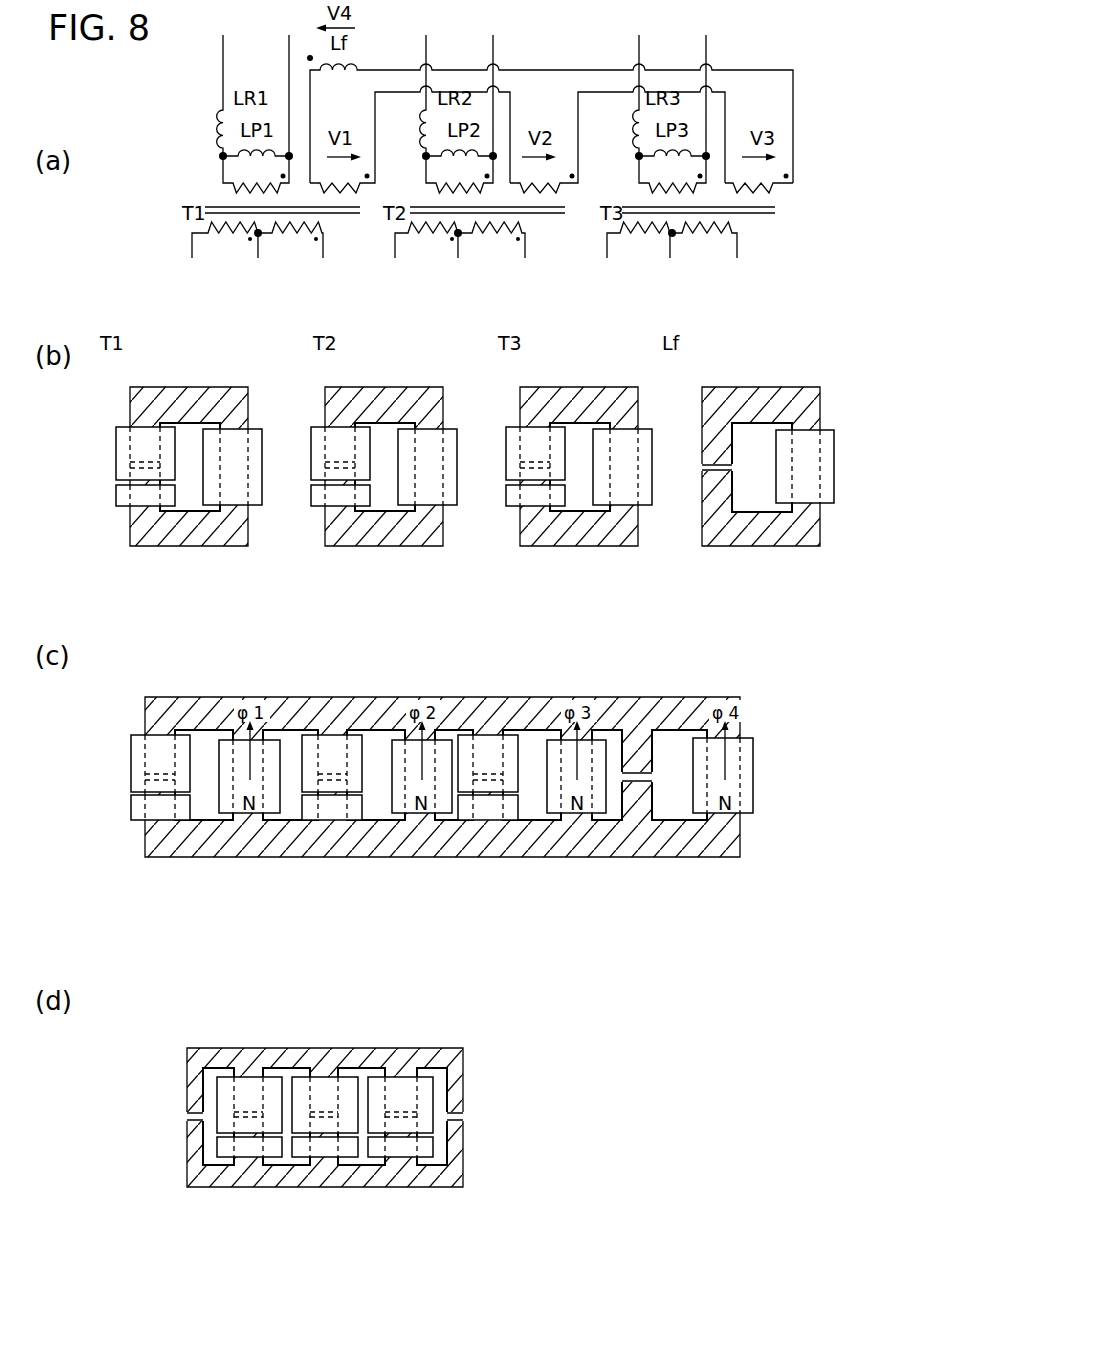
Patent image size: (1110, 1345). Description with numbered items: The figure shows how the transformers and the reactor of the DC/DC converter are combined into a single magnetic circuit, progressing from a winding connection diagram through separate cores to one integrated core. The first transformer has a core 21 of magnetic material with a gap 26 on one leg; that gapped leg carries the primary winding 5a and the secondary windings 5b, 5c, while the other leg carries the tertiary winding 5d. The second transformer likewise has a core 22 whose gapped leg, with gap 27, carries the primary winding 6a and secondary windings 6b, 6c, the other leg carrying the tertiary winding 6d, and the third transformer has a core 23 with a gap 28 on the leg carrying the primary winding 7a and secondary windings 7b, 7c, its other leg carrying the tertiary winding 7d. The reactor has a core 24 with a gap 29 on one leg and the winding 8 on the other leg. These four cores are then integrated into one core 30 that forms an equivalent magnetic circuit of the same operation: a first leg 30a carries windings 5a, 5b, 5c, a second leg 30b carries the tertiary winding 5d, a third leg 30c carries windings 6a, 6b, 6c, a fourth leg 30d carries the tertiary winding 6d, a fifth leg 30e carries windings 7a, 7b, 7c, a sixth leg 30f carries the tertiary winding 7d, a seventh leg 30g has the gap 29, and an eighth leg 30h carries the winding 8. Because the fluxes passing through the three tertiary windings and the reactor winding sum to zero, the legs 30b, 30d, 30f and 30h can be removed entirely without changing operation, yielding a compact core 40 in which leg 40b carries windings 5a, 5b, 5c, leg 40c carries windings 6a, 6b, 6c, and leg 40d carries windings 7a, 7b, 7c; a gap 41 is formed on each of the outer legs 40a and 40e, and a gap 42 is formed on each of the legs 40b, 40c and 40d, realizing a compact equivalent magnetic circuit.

The primary winding 5a is at (223, 178).
The secondary winding 5b is at (192, 245).
The secondary winding 5c is at (323, 243).
The tertiary winding 5d is at (363, 187).
The primary winding 6a is at (426, 178).
The secondary winding 6b is at (407, 259).
The secondary winding 6c is at (495, 259).
The tertiary winding 6d is at (570, 172).
The primary winding 7a is at (639, 180).
The secondary winding 7b is at (637, 263).
The secondary winding 7c is at (707, 263).
The tertiary winding 7d is at (779, 195).
The winding 8 is at (834, 466).
The core 21 is at (173, 387).
The core 22 is at (376, 387).
The core 23 is at (558, 387).
The core 24 is at (752, 387).
The gap 26 is at (130, 465).
The gap 27 is at (325, 463).
The gap 28 is at (520, 463).
The gap 29 is at (702, 467).
The core 30 is at (488, 697).
The first leg 30a is at (148, 838).
The second leg 30b is at (228, 823).
The third leg 30c is at (368, 827).
The fourth leg 30d is at (438, 823).
The fifth leg 30e is at (510, 822).
The sixth leg 30f is at (603, 823).
The seventh leg 30g is at (655, 815).
The eighth leg 30h is at (742, 827).
The core 40 is at (233, 1048).
The leg 40a is at (190, 1165).
The leg 40b is at (280, 1166).
The leg 40c is at (355, 1166).
The leg 40d is at (440, 1166).
The leg 40e is at (463, 1157).
The gap 41 is at (187, 1116).
The gap 42 is at (268, 1113).